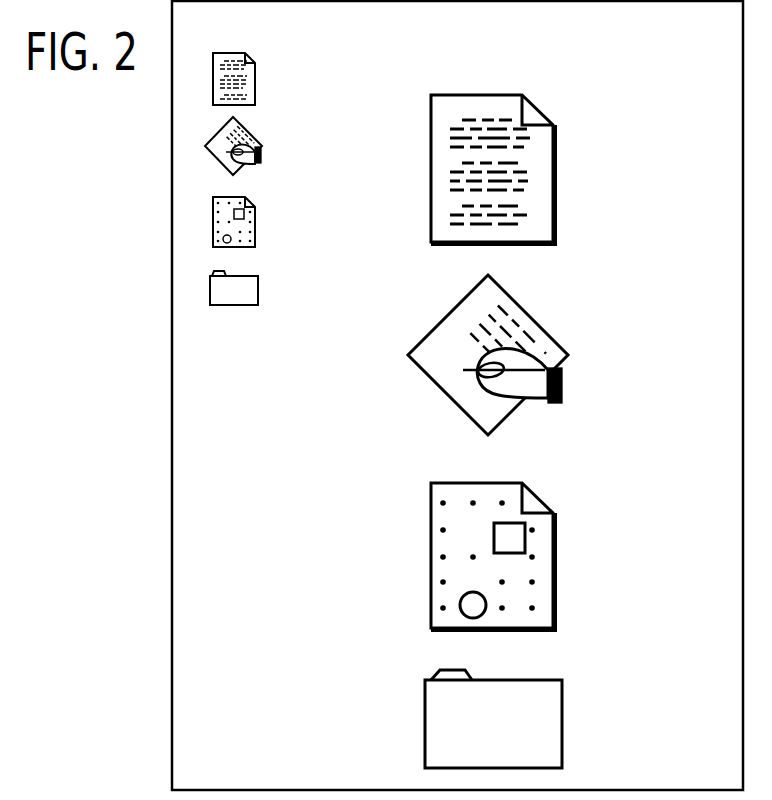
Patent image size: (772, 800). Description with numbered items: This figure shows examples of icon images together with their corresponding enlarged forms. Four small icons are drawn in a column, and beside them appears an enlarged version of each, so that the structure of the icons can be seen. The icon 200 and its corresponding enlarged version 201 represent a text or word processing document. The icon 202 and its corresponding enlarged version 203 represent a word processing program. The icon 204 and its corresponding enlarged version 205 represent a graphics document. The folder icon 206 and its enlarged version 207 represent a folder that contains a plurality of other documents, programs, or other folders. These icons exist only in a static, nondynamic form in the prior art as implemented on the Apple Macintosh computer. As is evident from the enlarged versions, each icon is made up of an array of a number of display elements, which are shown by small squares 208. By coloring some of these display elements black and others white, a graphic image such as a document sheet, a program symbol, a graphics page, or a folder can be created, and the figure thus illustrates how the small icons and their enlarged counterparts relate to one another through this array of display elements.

The icon 200 is at (258, 58).
The enlarged version 201 is at (560, 93).
The icon 202 is at (262, 123).
The enlarged version 203 is at (535, 349).
The icon 204 is at (262, 192).
The enlarged version 205 is at (565, 488).
The folder icon 206 is at (262, 260).
The enlarged version 207 is at (572, 682).
The small squares 208 is at (488, 275).